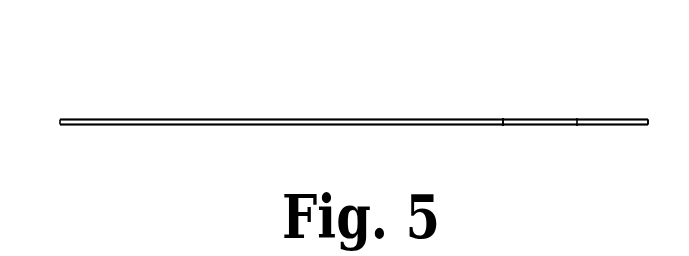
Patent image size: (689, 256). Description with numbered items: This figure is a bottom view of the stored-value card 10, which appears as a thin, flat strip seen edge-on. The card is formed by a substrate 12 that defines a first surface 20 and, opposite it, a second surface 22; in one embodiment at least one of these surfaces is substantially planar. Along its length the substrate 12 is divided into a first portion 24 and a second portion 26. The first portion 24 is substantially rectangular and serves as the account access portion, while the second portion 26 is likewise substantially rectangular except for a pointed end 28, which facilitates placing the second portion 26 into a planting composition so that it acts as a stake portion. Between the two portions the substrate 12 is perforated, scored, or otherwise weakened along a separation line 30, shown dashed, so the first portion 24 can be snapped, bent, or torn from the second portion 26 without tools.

The stored-value card 10 is at (88, 74).
The substrate 12 is at (235, 117).
The first surface 20 is at (127, 118).
The second surface 22 is at (175, 125).
The first portion 24 is at (383, 118).
The second portion 26 is at (550, 118).
The pointed end 28 is at (575, 125).
The separation line 30 is at (503, 125).